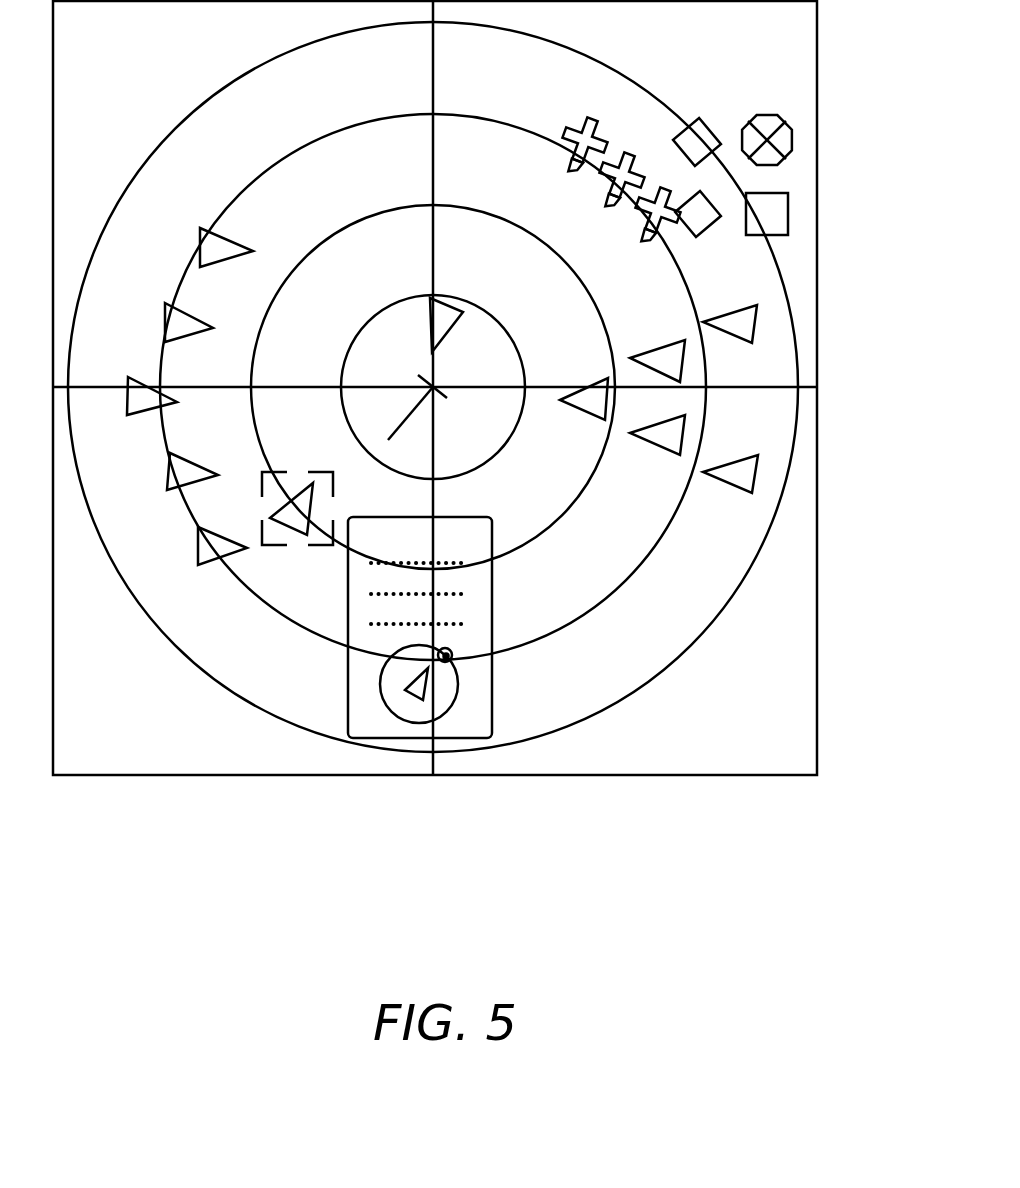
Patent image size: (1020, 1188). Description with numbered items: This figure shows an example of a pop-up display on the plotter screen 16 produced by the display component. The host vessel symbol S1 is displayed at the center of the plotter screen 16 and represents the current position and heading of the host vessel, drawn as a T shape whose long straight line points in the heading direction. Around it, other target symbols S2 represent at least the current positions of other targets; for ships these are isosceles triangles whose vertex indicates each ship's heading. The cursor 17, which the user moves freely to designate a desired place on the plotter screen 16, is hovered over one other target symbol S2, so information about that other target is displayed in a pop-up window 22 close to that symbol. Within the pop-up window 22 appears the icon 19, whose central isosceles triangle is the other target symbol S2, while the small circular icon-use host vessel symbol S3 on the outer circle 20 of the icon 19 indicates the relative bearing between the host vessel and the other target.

The plotter screen 16 is at (233, 806).
The cursor 17 is at (318, 547).
The icon 19 is at (463, 719).
The outer circle 20 is at (420, 724).
The pop-up window 22 is at (347, 682).
The host vessel symbol S1 is at (405, 421).
The other target symbol S2 is at (212, 228).
The icon-use host vessel symbol S3 is at (452, 660).